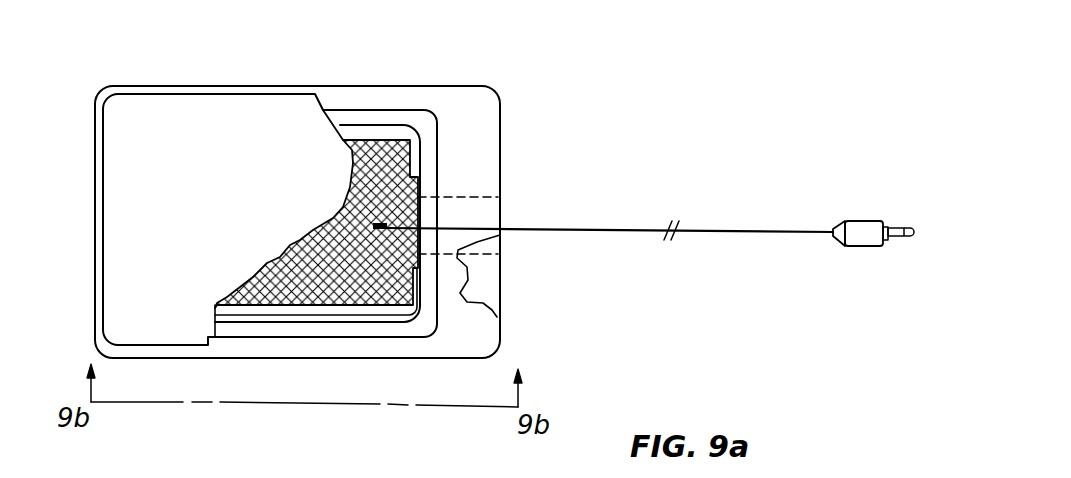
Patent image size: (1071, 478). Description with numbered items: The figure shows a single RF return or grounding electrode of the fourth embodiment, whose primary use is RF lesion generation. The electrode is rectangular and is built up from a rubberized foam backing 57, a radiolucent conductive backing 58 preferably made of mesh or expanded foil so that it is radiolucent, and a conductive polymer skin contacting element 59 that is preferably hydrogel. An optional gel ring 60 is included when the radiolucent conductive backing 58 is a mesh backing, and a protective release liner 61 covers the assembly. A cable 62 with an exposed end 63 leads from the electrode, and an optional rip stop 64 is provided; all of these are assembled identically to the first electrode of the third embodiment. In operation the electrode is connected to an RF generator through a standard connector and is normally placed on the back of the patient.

The rubberized foam backing 57 is at (317, 119).
The radiolucent conductive backing 58 is at (422, 183).
The conductive polymer skin contacting element 59 is at (440, 96).
The gel ring 60 is at (253, 325).
The protective release liner 61 is at (93, 210).
The cable 62 is at (572, 228).
The exposed end 63 is at (377, 225).
The rip stop 64 is at (483, 218).